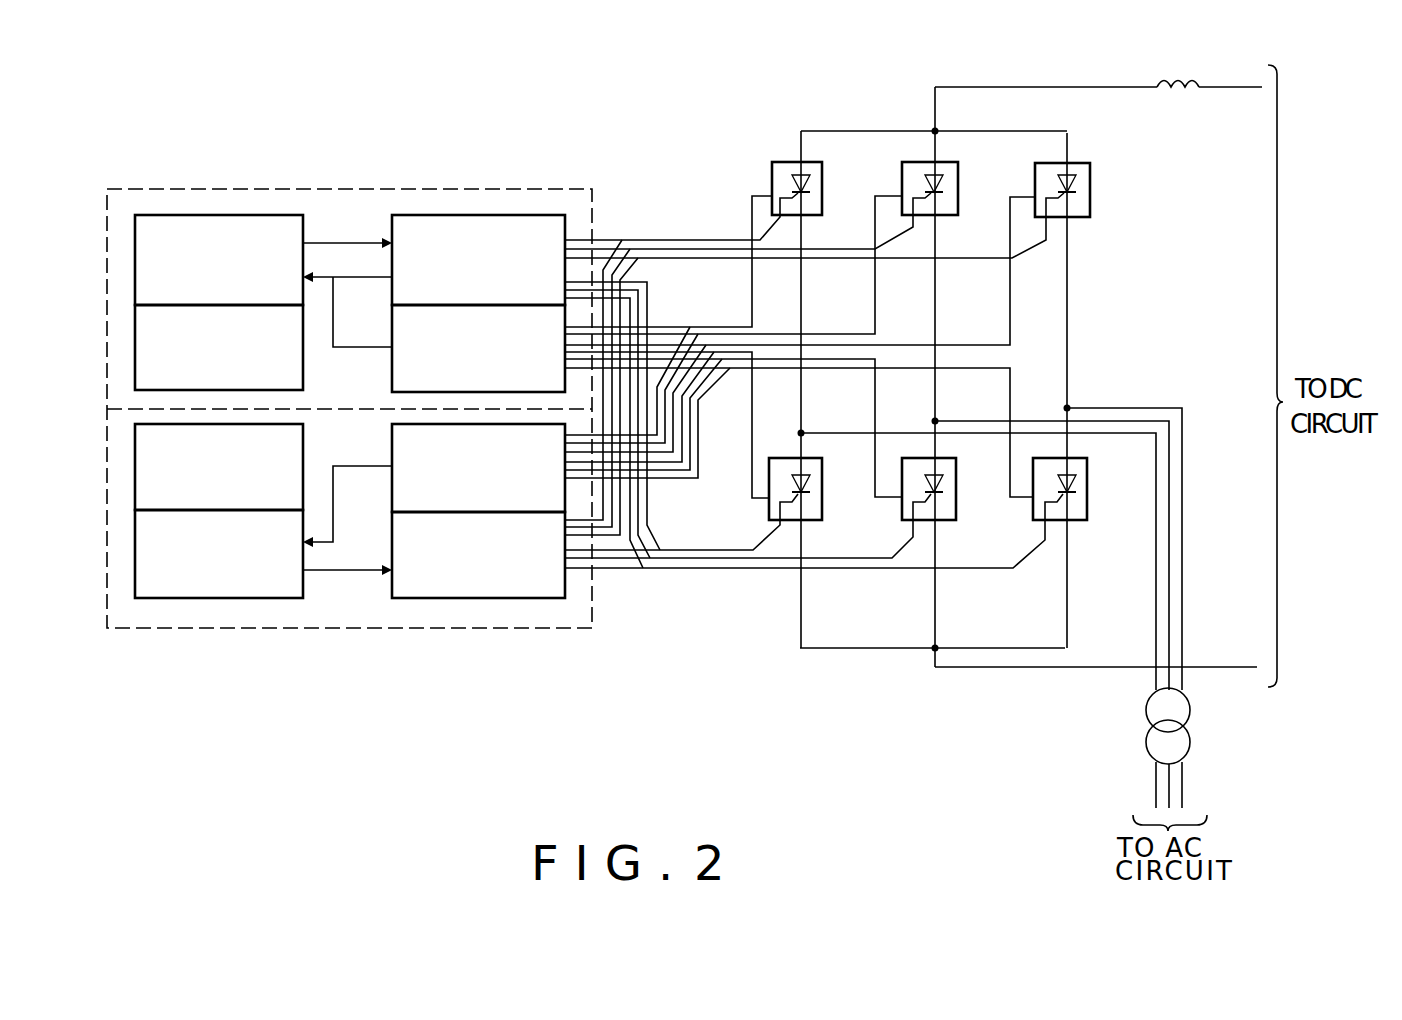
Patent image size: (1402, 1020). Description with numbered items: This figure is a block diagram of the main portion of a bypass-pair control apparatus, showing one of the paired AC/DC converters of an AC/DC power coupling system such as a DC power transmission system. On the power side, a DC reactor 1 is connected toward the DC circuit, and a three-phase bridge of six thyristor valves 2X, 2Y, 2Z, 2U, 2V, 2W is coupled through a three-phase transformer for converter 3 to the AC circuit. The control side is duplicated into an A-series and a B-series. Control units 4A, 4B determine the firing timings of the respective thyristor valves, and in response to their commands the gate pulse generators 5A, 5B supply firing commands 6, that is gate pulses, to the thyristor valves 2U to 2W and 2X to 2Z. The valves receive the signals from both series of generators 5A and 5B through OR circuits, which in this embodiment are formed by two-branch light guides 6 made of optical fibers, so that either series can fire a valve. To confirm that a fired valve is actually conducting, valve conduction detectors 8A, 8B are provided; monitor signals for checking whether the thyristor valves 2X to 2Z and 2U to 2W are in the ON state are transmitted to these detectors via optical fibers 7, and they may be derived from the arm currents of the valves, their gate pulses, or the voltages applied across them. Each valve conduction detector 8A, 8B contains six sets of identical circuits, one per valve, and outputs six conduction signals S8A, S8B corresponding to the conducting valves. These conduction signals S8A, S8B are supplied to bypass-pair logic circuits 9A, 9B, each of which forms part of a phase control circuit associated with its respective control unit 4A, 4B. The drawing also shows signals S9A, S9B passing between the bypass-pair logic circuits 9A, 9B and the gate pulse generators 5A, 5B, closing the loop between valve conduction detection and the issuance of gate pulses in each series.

The DC reactor 1 is at (1175, 75).
The thyristor valve 2X is at (823, 190).
The thyristor valve 2Y is at (958, 190).
The thyristor valve 2Z is at (1090, 195).
The thyristor valve 2U is at (823, 500).
The thyristor valve 2V is at (957, 500).
The thyristor valve 2W is at (1088, 500).
The 3-phase transformer for converter 3 is at (1190, 710).
The control unit 4A is at (135, 352).
The control unit 4B is at (135, 465).
The gate pulse generator 5A is at (392, 277).
The gate pulse generator 5B is at (392, 523).
The firing commands (gate pulses) / 2-branch light guides 6 is at (650, 240).
The optical fibers 7 is at (700, 327).
The valve conduction detector 8A is at (392, 335).
The valve conduction detector 8B is at (392, 490).
The bypass-pair logic circuit 9A is at (135, 240).
The bypass-pair logic circuit 9B is at (135, 568).
The conduction signals S8A is at (350, 348).
The conduction signals S8B is at (350, 466).
The bypass pair signal A S9A is at (341, 240).
The bypass pair signal B S9B is at (348, 572).